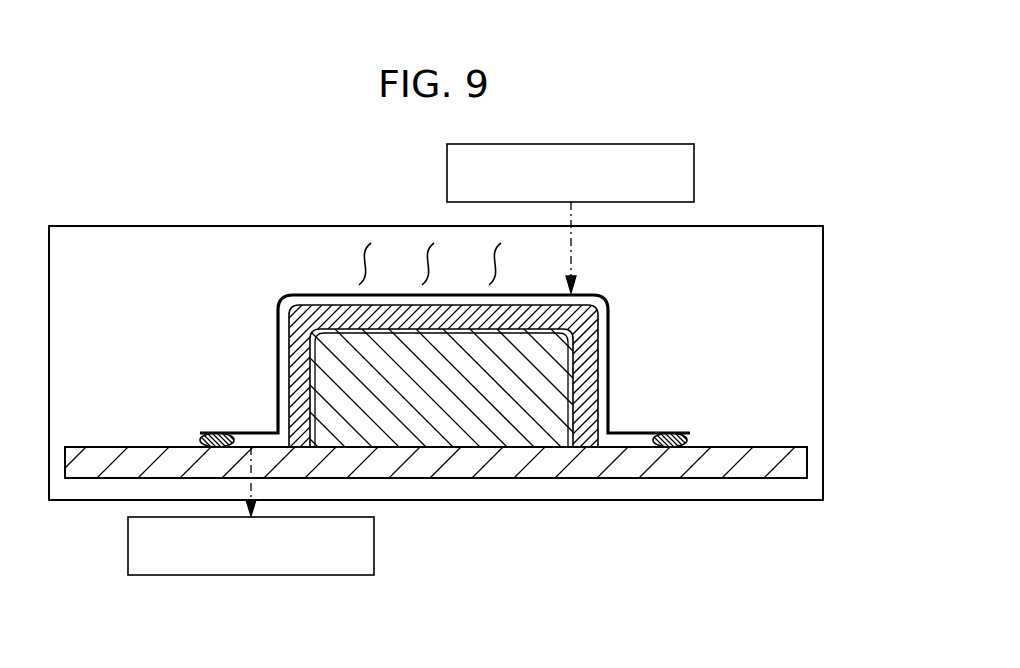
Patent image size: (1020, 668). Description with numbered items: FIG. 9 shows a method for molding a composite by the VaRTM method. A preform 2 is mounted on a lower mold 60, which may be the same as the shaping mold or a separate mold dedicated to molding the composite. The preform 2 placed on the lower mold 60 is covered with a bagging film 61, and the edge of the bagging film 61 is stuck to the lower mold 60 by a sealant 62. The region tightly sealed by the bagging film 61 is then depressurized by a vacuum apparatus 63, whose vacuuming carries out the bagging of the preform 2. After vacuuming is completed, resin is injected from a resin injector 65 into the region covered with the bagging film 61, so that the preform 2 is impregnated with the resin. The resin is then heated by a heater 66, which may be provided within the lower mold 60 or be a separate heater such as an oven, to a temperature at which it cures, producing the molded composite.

The preform 2 is at (303, 352).
The lower mold 60 is at (466, 463).
The bagging film 61 is at (628, 431).
The sealant 62 is at (676, 432).
The vacuum apparatus 63 is at (127, 547).
The resin injector 65 is at (694, 176).
The heater 66 is at (757, 500).